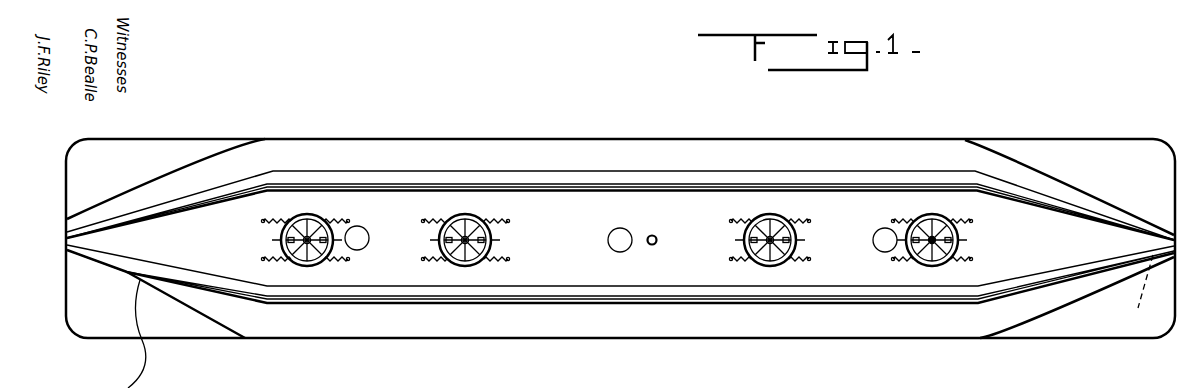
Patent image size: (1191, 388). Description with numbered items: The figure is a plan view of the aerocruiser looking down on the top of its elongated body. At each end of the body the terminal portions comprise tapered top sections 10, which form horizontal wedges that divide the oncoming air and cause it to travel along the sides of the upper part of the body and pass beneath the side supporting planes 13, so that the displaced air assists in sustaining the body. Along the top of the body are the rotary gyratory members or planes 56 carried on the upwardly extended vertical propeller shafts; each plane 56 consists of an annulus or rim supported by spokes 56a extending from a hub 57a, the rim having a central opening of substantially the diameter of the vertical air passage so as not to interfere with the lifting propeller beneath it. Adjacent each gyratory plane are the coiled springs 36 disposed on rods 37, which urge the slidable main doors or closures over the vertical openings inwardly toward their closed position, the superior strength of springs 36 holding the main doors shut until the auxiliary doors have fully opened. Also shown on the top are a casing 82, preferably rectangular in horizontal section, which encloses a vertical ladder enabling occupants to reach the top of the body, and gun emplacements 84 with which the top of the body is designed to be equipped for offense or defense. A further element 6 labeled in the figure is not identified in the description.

The casing 6 is at (693, 325).
The tapered top sections 10 is at (1138, 294).
The side supporting planes 13 is at (693, 178).
The coiled springs 36 is at (983, 254).
The rods 37 is at (262, 259).
The rotary gyratory member or plane 56 is at (304, 213).
The spokes 56a is at (320, 230).
The hub 57a is at (314, 238).
The casing 82 is at (659, 238).
The gun emplacements 84 is at (366, 248).